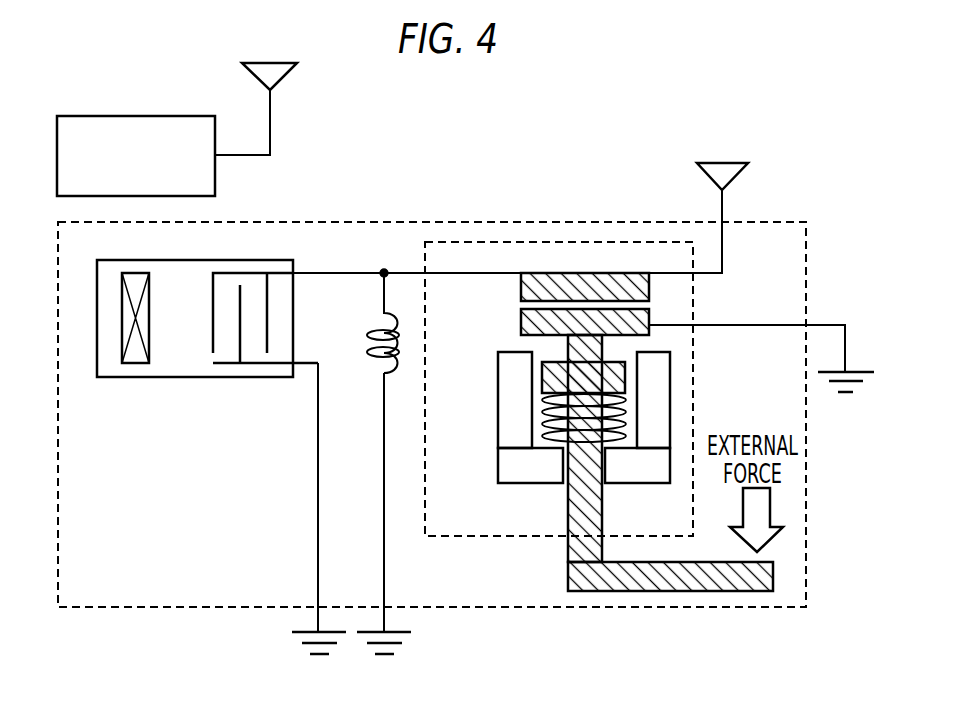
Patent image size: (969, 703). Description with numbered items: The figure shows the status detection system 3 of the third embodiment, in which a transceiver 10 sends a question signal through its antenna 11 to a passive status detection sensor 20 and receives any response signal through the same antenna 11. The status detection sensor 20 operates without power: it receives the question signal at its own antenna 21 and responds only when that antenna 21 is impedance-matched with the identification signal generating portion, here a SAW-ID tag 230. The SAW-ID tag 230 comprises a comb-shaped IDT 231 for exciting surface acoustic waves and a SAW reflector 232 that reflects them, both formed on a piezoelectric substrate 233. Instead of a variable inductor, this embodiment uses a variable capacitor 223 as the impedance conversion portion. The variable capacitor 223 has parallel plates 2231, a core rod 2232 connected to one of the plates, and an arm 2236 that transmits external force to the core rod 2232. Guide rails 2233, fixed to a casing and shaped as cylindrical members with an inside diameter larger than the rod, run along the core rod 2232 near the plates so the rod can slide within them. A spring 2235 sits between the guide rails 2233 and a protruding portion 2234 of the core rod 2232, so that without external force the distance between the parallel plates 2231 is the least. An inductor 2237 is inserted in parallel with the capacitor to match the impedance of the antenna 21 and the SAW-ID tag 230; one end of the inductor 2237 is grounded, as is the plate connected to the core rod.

The status detection system 3 is at (455, 164).
The transceiver 10 is at (128, 116).
The antenna 11 is at (242, 63).
The status detection sensor 20 is at (560, 221).
The antenna 21 is at (720, 163).
The variable capacitor 223 is at (430, 537).
The SAW-ID tag 230 is at (200, 350).
The IDT 231 is at (270, 363).
The SAW reflector 232 is at (140, 378).
The piezoelectric substrate 233 is at (187, 363).
The parallel plates 2231 is at (650, 275).
The core rod 2232 is at (568, 526).
The guide rails 2233 is at (498, 428).
The protruding portion 2234 is at (542, 365).
The spring 2235 is at (608, 447).
The arm 2236 is at (568, 570).
The inductor 2237 is at (362, 342).